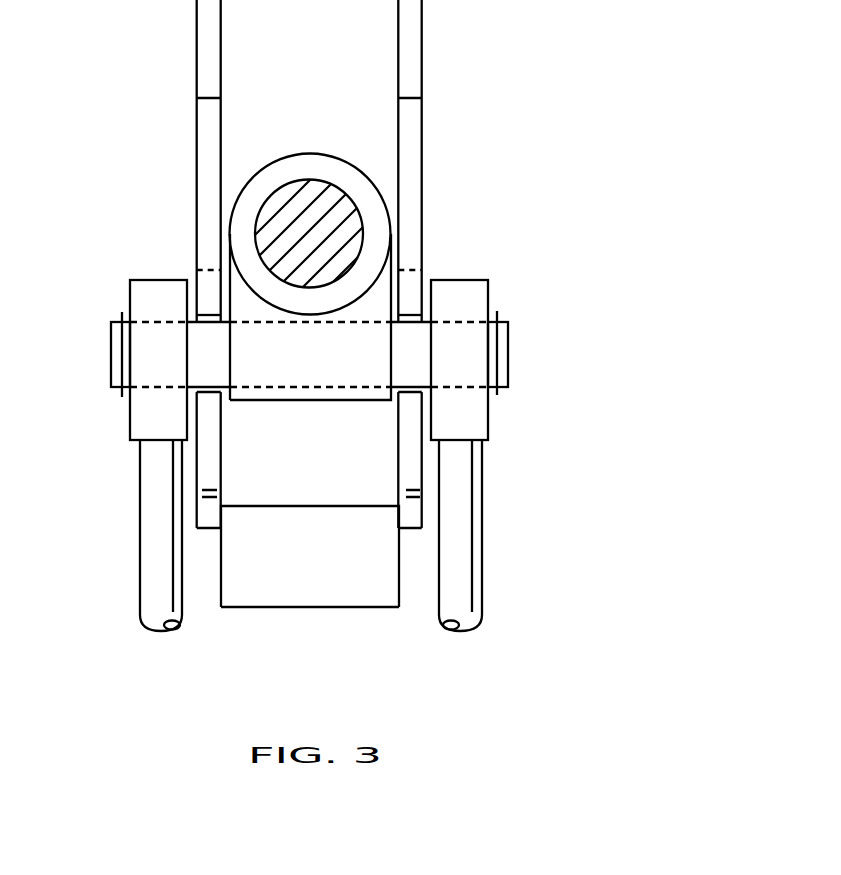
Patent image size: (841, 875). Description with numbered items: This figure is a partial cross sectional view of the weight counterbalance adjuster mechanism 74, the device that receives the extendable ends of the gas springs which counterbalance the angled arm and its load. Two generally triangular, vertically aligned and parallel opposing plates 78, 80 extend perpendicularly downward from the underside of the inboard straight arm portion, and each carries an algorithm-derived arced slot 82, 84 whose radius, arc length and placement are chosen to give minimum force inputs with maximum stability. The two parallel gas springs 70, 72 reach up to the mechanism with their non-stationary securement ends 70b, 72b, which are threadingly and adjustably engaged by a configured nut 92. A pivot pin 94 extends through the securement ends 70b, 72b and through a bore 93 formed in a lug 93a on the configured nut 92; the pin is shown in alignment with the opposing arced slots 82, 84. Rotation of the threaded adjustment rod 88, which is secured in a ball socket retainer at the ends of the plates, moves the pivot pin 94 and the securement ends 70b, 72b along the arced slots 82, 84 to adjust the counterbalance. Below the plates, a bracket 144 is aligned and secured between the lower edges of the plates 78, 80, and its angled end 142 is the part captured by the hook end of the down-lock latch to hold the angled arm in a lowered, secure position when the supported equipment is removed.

The weight counterbalance adjuster mechanism 74 is at (355, 337).
The plate 78 is at (212, 153).
The plate 80 is at (412, 135).
The arced slot 82 is at (213, 315).
The arced slot 84 is at (408, 316).
The threaded adjustment rod 88 is at (330, 232).
The configured nut 92 is at (290, 168).
The bore 93 is at (300, 387).
The lug 93a is at (243, 298).
The pivot pin 94 is at (509, 341).
The gas spring 70 is at (160, 513).
The non-stationary securement end 70b is at (150, 407).
The gas spring 72 is at (458, 574).
The non-stationary securement end 72b is at (467, 419).
The angled end 142 is at (330, 607).
The bracket 144 is at (278, 569).